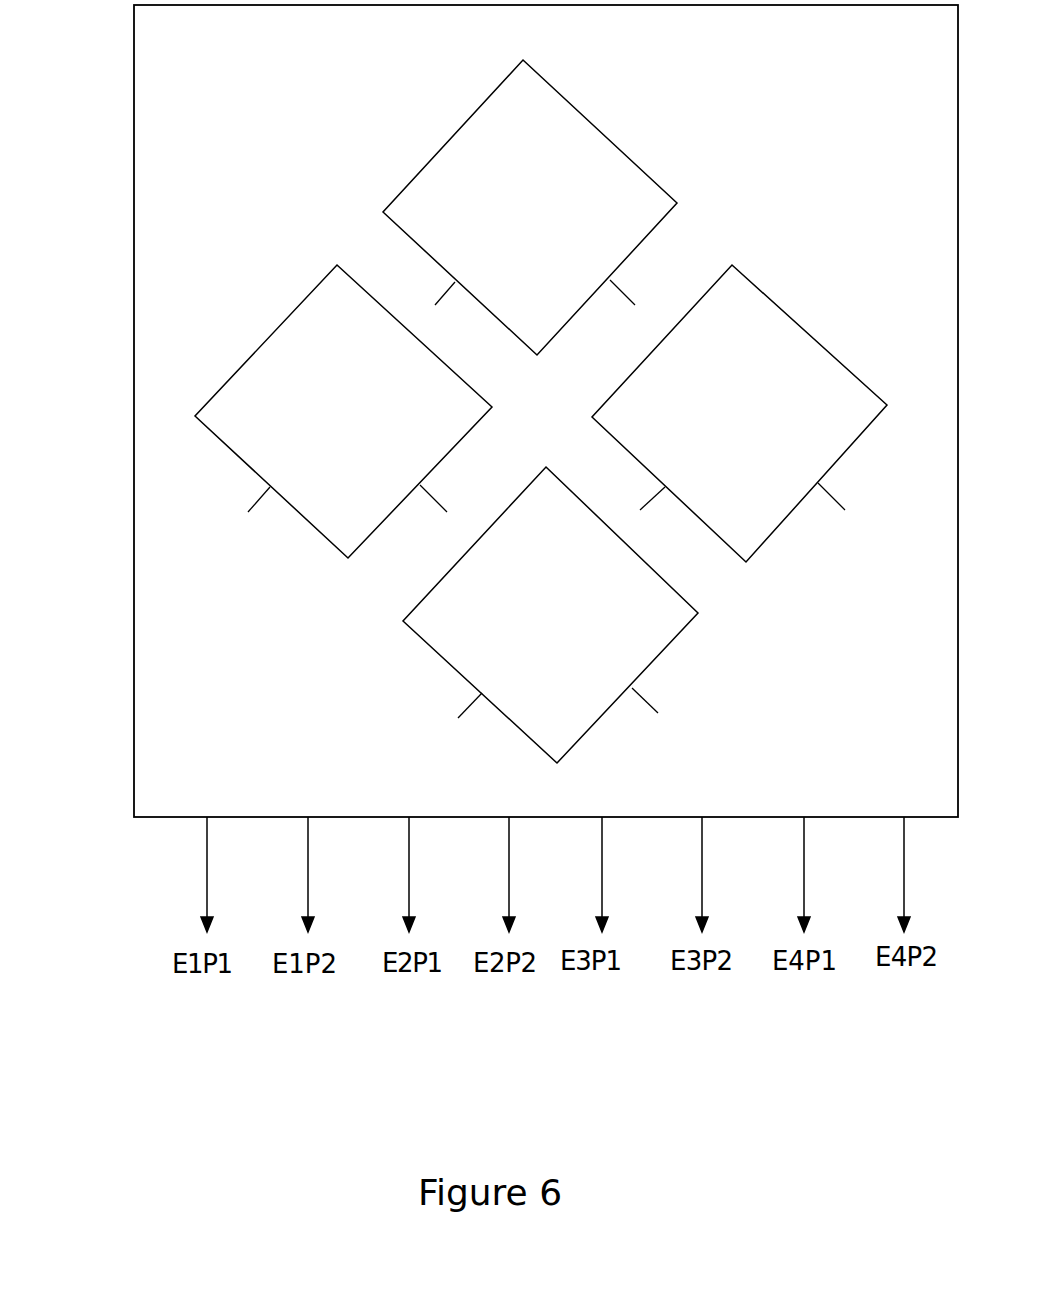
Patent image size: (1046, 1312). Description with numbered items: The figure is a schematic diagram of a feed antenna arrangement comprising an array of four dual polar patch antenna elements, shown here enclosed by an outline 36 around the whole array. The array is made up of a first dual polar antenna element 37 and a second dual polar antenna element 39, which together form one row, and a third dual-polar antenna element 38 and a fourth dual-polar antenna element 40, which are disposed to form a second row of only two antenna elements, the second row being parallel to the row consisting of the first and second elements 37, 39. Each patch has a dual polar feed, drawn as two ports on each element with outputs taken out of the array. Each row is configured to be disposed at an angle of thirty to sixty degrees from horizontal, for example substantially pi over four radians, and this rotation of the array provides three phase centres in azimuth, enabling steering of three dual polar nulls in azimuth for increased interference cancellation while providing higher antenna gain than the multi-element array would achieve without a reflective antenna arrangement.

The array housing 36 is at (134, 108).
The first dual polar antenna element 37 is at (623, 143).
The third dual-polar antenna element 38 is at (805, 325).
The second dual polar antenna element 39 is at (313, 533).
The fourth dual-polar antenna element 40 is at (425, 642).